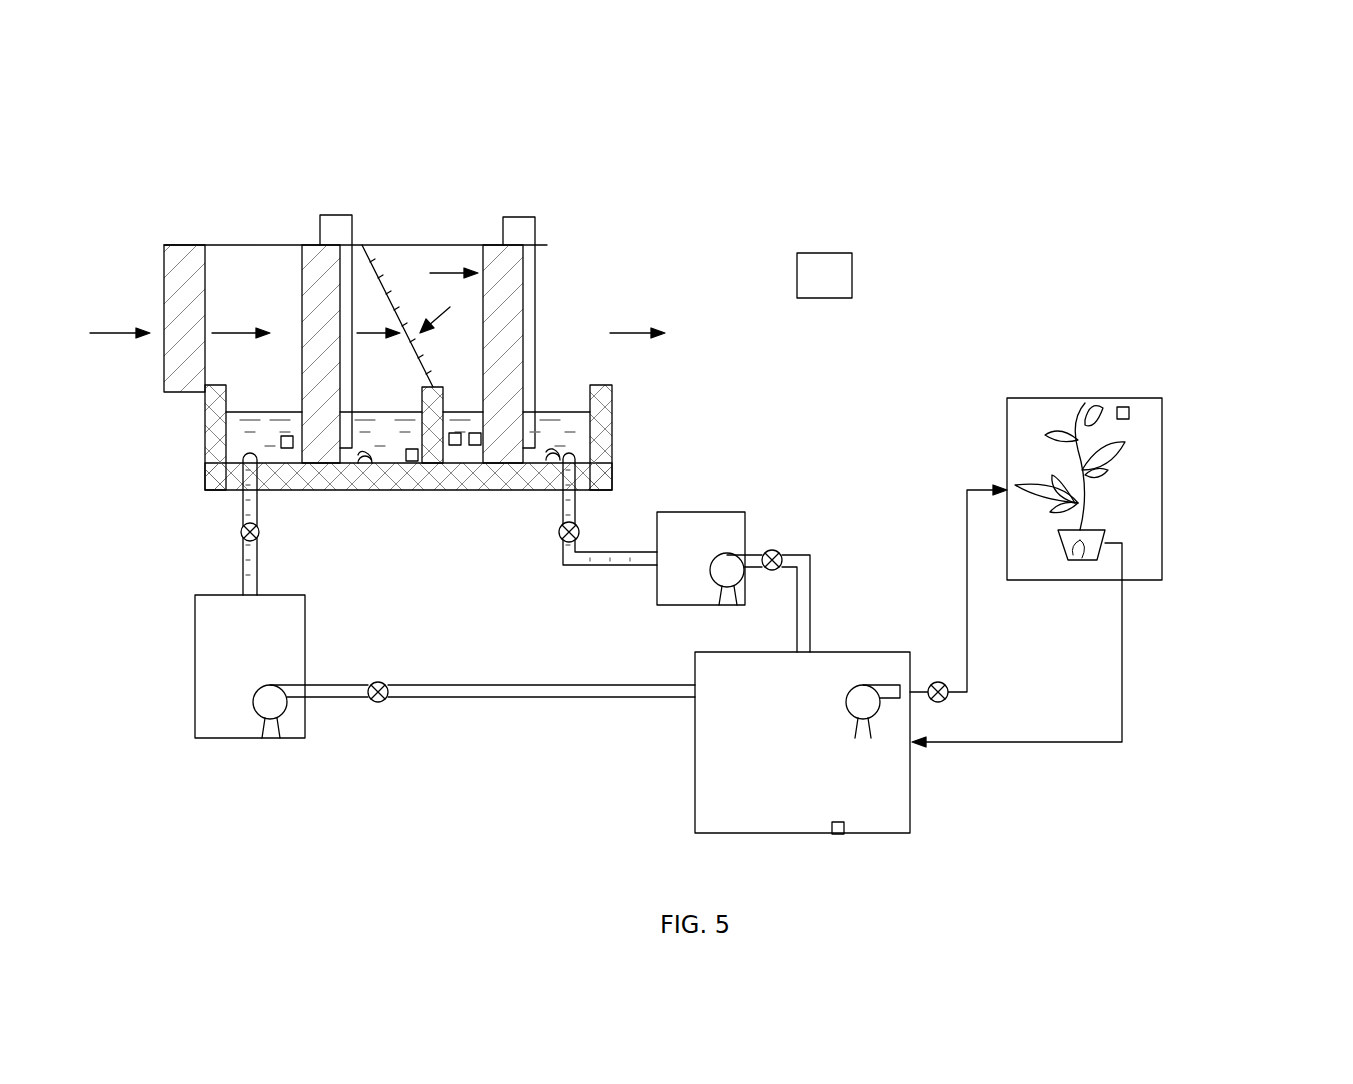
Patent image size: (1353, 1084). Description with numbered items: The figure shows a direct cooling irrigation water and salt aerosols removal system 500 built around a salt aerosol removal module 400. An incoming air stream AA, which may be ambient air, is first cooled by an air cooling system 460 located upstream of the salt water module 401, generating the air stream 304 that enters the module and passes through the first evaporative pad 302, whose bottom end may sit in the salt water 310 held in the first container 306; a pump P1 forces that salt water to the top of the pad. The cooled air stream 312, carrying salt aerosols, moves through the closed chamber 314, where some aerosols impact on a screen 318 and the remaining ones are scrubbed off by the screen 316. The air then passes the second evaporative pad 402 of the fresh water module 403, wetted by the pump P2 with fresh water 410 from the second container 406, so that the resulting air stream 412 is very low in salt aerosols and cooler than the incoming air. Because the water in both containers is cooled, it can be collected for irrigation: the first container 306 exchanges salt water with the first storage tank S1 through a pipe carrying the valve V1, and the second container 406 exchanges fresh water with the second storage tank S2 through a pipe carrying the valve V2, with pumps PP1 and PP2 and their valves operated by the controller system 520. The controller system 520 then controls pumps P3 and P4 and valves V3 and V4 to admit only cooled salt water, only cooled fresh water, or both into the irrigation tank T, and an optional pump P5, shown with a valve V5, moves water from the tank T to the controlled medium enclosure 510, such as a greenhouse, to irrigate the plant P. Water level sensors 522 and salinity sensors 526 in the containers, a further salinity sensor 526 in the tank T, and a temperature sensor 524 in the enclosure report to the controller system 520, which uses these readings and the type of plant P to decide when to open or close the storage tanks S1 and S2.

The direct cooling irrigation water and salt aerosols removal system 500 is at (1203, 173).
The salt aerosol removal module 400 is at (404, 142).
The salt water module 401 is at (442, 180).
The fresh water module 403 is at (442, 180).
The air cooling system 460 is at (185, 240).
The incoming air stream AA is at (113, 333).
The incoming air stream 304 is at (228, 333).
The first evaporative pad 302 is at (320, 244).
The cooled air stream 312 is at (370, 333).
The screen 318 is at (400, 297).
The screen 316 is at (450, 310).
The second evaporative pad 402 is at (502, 244).
The resulting air stream 412 is at (636, 333).
The salt water 310 is at (395, 458).
The fresh water 410 is at (460, 460).
The first container 306 is at (205, 412).
The second container 406 is at (612, 412).
The closed chamber 314 is at (368, 405).
The water level sensor 522 is at (287, 449).
The salinity sensor 526 is at (455, 432).
The pump P1 is at (362, 465).
The pump P2 is at (552, 445).
The pump PP1 is at (243, 458).
The pump PP2 is at (582, 455).
The valve V1 is at (240, 532).
The valve V2 is at (578, 532).
The valve V3 is at (378, 682).
The valve V4 is at (772, 550).
The valve V5 is at (938, 682).
The first storage tank S1 is at (262, 664).
The second storage tank S2 is at (702, 562).
The pump P3 is at (253, 700).
The pump P4 is at (727, 553).
The optional pump P5 is at (860, 685).
The irrigation tank T is at (770, 754).
The controlled medium enclosure 510 is at (1052, 398).
The temperature sensor 524 is at (1123, 407).
The plant P is at (1085, 495).
The controller system 520 is at (853, 275).